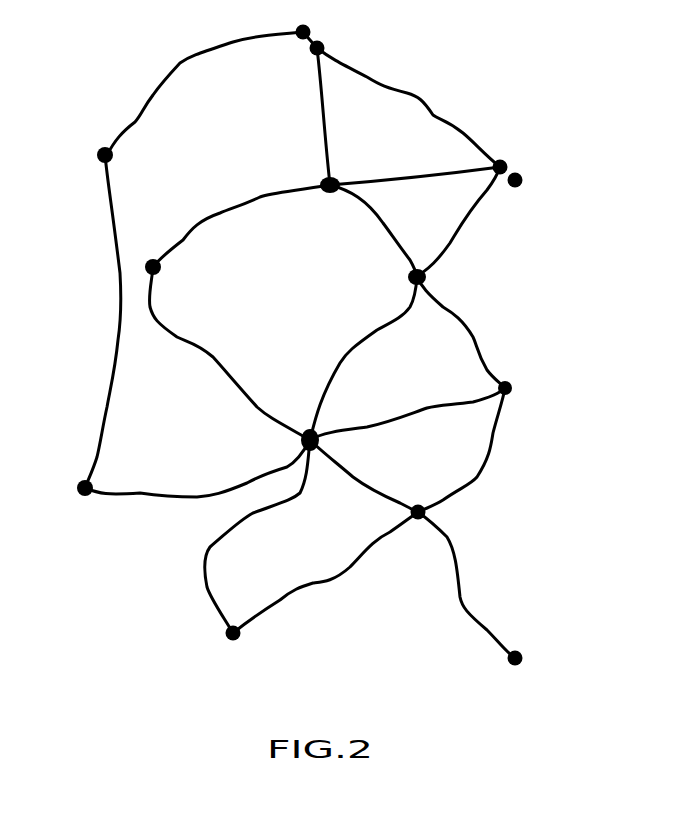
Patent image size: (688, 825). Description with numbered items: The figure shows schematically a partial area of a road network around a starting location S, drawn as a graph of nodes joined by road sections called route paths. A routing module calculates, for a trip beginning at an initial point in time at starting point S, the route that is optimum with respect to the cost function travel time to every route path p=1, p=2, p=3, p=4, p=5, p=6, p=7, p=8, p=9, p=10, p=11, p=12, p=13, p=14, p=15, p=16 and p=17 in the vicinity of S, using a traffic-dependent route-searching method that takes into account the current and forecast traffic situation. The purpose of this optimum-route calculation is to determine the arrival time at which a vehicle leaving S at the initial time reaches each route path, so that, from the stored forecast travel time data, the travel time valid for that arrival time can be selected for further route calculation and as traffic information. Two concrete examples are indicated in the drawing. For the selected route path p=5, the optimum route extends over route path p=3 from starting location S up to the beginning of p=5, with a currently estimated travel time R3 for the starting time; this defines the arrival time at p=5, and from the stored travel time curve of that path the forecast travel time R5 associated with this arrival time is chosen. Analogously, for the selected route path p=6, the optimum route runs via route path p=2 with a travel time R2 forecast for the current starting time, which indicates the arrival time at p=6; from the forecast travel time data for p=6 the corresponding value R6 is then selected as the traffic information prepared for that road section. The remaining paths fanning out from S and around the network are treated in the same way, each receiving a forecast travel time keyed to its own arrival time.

The route path p= 1 is at (407, 401).
The route path p= 2 is at (357, 358).
The route path p= 3 is at (364, 484).
The route path p= 4 is at (461, 393).
The route path p= 5 is at (470, 585).
The route path p= 6 is at (463, 222).
The route path p= 7 is at (373, 231).
The route path p= 8 is at (415, 162).
The route path p= 9 is at (197, 468).
The route path p= 10 is at (229, 353).
The route path p= 11 is at (85, 321).
The route path p= 12 is at (205, 93).
The route path p= 13 is at (241, 206).
The route path p= 14 is at (408, 107).
The route path p= 15 is at (342, 92).
The route path p= 16 is at (222, 536).
The route path p= 17 is at (325, 585).
The starting location S is at (295, 446).
The travel time R2(t0) R2 is at (378, 295).
The travel time R3(t0) R3 is at (396, 488).
The forecast travel time R5(t(1)) R5 is at (450, 639).
The forecast travel time R6(t(2)) R6 is at (545, 195).